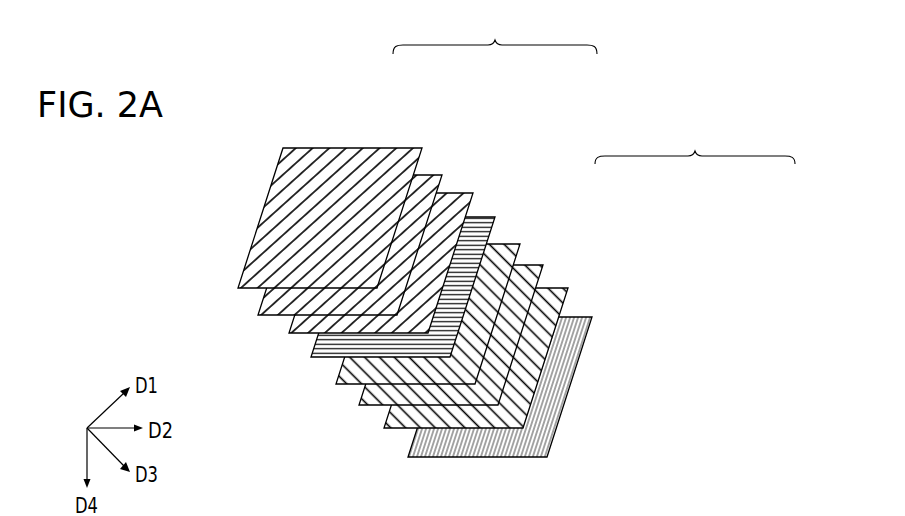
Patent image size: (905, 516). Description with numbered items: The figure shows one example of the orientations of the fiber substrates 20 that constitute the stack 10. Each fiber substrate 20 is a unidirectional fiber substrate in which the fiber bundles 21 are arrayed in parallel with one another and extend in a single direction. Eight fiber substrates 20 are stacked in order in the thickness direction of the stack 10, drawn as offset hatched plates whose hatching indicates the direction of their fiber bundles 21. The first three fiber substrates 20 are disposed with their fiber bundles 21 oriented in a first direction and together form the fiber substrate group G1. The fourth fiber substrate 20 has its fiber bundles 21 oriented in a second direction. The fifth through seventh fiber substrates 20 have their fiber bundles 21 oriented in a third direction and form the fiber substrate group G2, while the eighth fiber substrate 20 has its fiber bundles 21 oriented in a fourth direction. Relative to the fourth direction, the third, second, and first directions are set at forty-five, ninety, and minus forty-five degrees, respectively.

The stack 10 is at (197, 250).
The fiber substrate 20 is at (713, 310).
The fiber bundle 21 is at (290, 148).
The fiber substrate group G1 is at (495, 33).
The fiber substrate group G2 is at (695, 141).